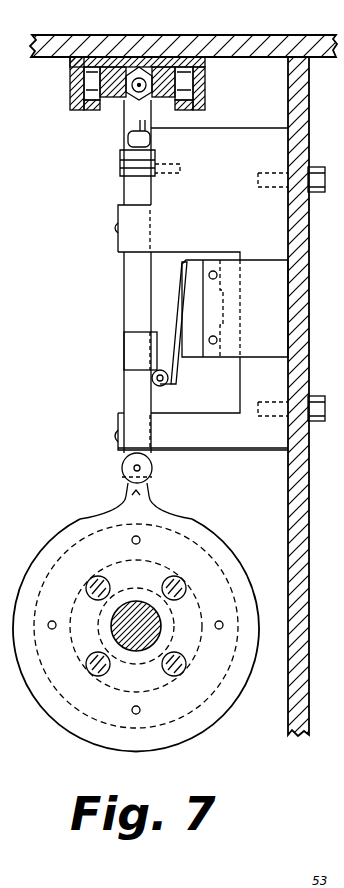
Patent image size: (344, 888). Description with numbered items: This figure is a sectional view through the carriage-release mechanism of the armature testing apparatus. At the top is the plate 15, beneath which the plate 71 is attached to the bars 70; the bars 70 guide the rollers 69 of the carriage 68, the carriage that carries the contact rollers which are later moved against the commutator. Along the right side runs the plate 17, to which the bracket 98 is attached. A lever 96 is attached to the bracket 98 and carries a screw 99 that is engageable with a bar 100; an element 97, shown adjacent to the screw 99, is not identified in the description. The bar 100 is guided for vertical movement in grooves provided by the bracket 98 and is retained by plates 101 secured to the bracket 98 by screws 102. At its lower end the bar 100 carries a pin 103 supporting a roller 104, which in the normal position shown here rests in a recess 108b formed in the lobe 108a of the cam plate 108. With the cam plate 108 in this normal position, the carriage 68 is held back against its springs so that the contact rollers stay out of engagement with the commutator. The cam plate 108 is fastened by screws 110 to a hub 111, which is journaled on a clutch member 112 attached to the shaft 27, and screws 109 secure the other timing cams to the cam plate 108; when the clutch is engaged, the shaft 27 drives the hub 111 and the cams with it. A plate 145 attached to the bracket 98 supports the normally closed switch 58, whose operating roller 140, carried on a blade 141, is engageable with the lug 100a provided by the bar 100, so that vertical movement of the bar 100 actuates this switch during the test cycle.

The plate 15 is at (165, 40).
The plate 17 is at (310, 130).
The shaft 27 is at (114, 616).
The switch S8 58 is at (289, 393).
The carriage 68 is at (118, 104).
The rollers 69 is at (90, 108).
The bars 70 is at (70, 103).
The plate 71 is at (70, 62).
The lever 96 is at (152, 126).
The adjusting nut 97 is at (120, 168).
The bracket 98 is at (244, 133).
The screw 99 is at (139, 94).
The bar 100 is at (124, 291).
The lug 100a is at (152, 345).
The plates 101 is at (118, 214).
The screws 102 is at (116, 233).
The pin 103 is at (134, 469).
The roller 104 is at (152, 466).
The cam plate 108 is at (212, 535).
The lobe 108a is at (150, 492).
The recess 108b is at (122, 505).
The screws 109 is at (219, 630).
The screws 110 is at (180, 672).
The hub 111 is at (96, 676).
The clutch member 112 is at (148, 668).
The roller 140 is at (162, 387).
The blade 141 is at (178, 378).
The plate 145 is at (270, 262).